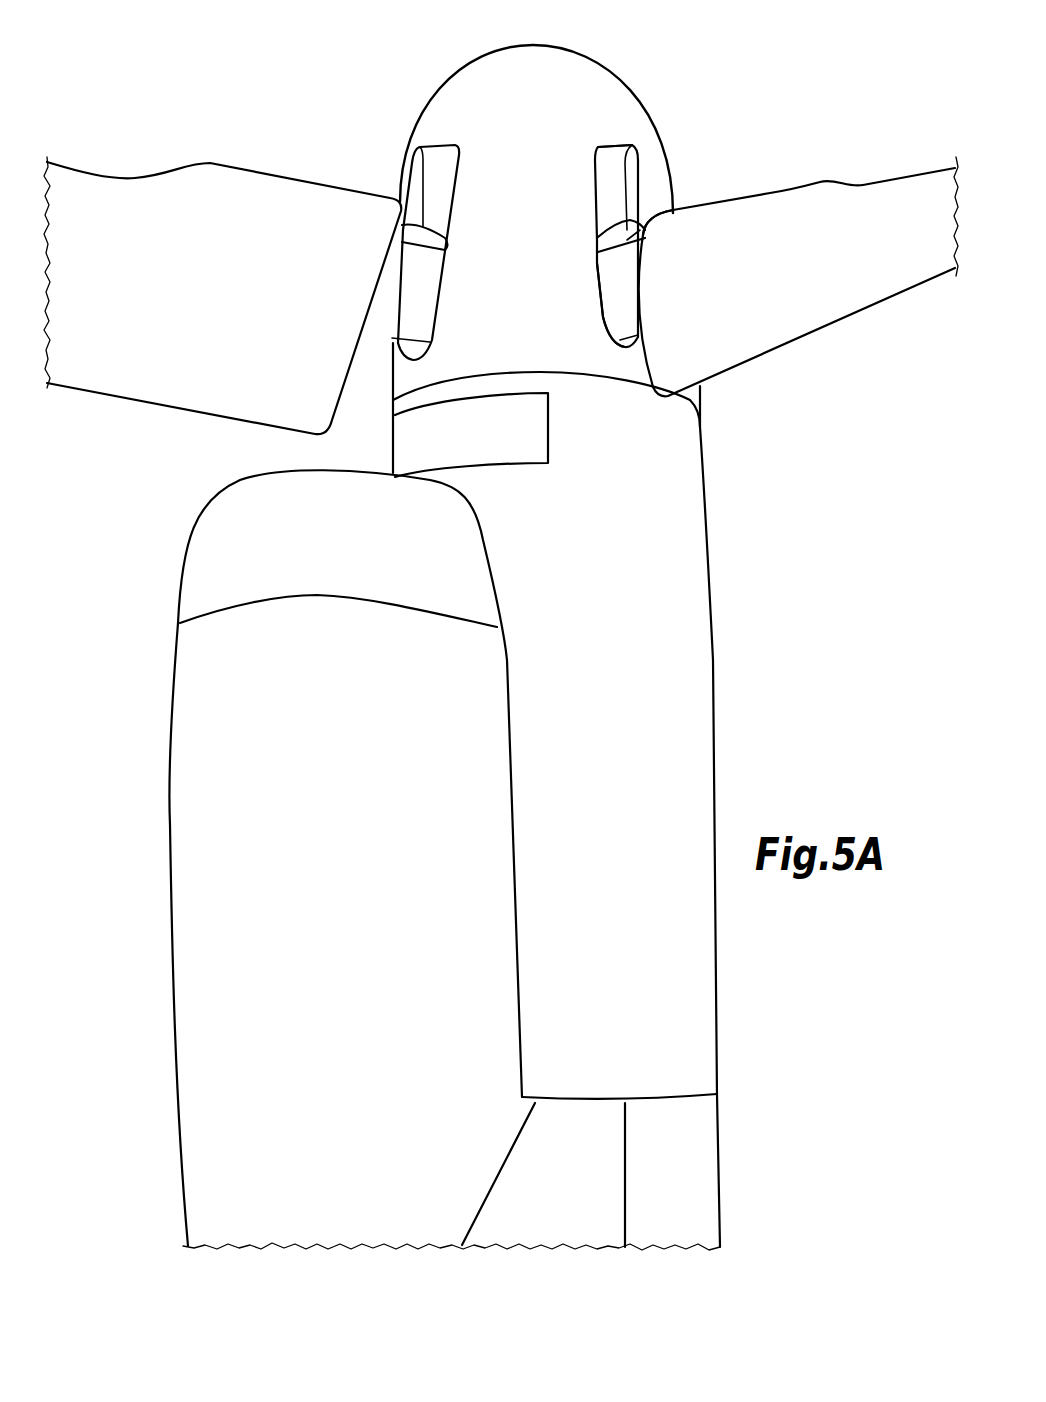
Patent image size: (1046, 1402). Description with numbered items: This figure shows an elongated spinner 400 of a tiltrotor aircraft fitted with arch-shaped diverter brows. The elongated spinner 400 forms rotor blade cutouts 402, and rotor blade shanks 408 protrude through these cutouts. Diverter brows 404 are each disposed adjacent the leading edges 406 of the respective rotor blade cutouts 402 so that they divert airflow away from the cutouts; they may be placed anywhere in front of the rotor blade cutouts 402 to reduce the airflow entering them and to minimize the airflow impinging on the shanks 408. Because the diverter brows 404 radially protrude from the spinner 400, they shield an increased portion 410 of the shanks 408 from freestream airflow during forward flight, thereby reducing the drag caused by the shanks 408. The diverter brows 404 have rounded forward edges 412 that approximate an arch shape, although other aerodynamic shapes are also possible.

The elongated spinner 400 is at (630, 92).
The rotor blade cutouts 402 is at (597, 283).
The diverter brows 404 is at (590, 178).
The leading edges 406 is at (597, 238).
The shanks 408 is at (628, 265).
The increased portion 410 is at (642, 222).
The rounded forward edges 412 is at (604, 147).